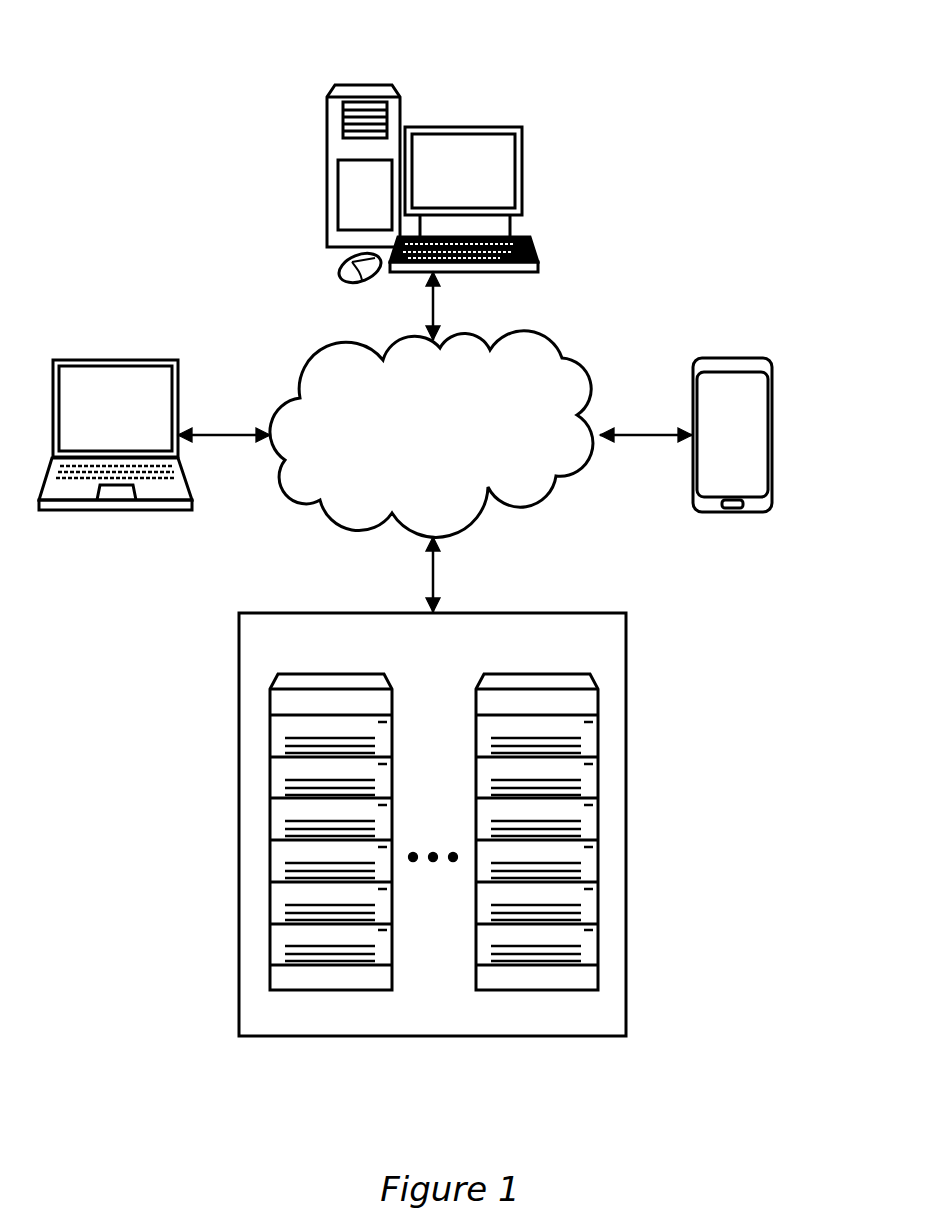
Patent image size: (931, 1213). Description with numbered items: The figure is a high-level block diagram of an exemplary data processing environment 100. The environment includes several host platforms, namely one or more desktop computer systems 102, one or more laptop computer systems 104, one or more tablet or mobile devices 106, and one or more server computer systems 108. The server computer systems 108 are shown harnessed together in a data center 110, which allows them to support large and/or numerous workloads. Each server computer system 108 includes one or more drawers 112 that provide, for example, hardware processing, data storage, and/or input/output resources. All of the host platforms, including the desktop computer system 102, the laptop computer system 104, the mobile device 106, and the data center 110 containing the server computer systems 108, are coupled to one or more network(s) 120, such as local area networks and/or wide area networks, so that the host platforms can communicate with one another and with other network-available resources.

The data processing environment 100 is at (728, 64).
The desktop computer system 102 is at (467, 127).
The laptop computer system 104 is at (157, 360).
The tablet or mobile device 106 is at (750, 358).
The server computer system 108 is at (366, 680).
The data center 110 is at (432, 824).
The drawer 112 is at (589, 947).
The network(s) 120 is at (431, 442).